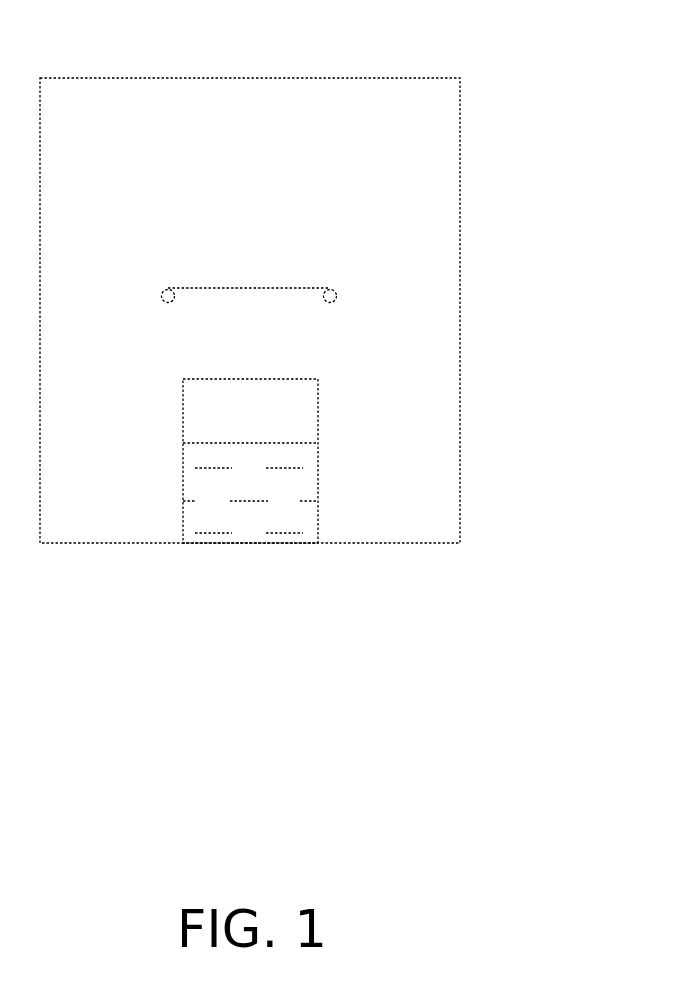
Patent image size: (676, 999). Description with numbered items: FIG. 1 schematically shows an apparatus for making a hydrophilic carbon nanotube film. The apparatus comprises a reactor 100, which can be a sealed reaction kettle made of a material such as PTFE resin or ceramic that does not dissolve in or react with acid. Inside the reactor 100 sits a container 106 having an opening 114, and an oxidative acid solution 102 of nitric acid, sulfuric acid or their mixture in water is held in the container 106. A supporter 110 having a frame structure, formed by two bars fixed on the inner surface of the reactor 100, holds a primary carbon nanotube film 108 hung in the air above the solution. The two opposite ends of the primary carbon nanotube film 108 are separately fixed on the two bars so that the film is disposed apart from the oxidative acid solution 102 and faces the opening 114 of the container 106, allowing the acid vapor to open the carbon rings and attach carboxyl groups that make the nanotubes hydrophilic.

The reactor 100 is at (332, 78).
The primary carbon nanotube film 108 is at (285, 287).
The supporter 110 is at (337, 291).
The opening 114 is at (280, 378).
The oxidative acid solution 102 is at (288, 443).
The container 106 is at (288, 497).